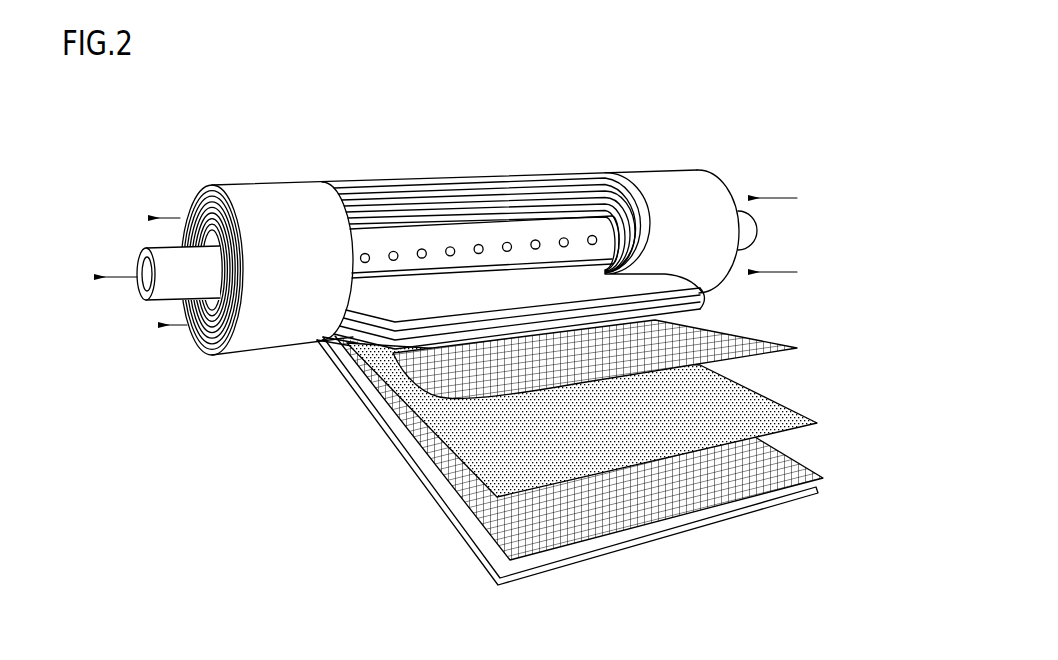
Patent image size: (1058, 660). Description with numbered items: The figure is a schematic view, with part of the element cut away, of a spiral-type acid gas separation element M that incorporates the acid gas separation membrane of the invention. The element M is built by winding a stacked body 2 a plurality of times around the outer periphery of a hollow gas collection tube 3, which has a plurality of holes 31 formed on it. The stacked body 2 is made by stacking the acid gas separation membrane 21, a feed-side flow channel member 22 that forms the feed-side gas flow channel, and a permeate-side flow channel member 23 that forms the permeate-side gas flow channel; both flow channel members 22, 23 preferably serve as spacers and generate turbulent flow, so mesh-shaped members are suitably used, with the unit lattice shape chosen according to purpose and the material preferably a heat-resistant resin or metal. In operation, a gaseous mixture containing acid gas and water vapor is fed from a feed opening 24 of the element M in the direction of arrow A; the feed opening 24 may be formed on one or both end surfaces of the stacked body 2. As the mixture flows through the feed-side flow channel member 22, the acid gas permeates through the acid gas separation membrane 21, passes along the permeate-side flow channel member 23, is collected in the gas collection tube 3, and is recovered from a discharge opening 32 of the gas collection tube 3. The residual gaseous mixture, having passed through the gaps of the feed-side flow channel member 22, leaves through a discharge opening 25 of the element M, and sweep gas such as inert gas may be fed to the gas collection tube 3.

The spiral-type acid gas separation element M is at (432, 252).
The stacked body 2 is at (602, 431).
The gas collection tube 3 is at (408, 246).
The acid gas separation membrane 21 is at (757, 413).
The feed-side flow channel member 22 is at (795, 477).
The permeate-side flow channel member 23 is at (603, 341).
The feed opening 24 is at (740, 181).
The discharge opening 25 is at (190, 344).
The holes 31 is at (481, 244).
The discharge opening of gas collection tube 32 is at (126, 260).
The arrow A is at (772, 222).